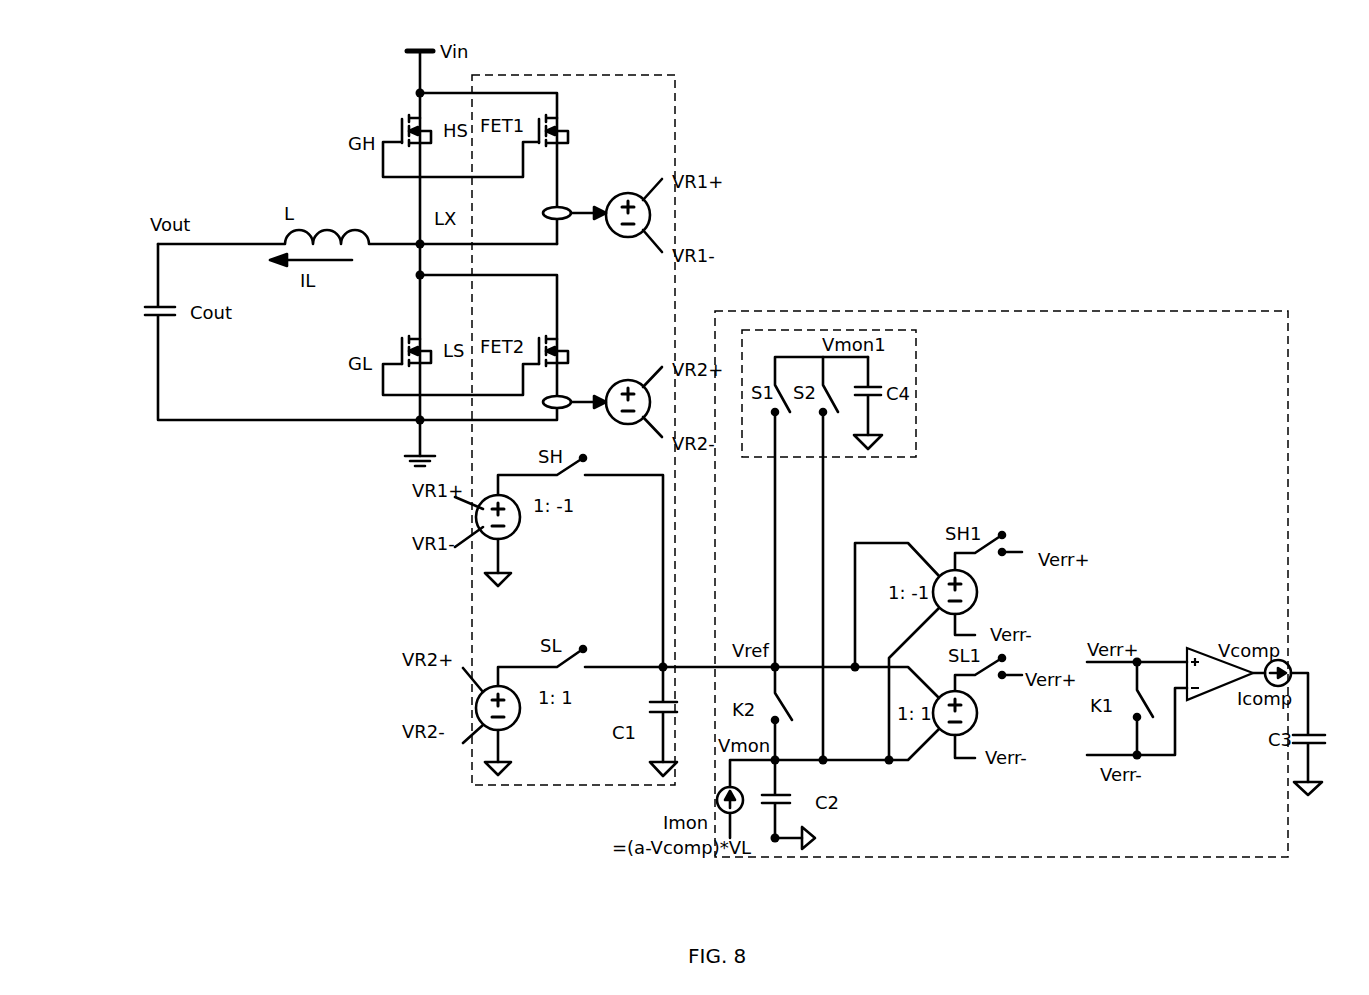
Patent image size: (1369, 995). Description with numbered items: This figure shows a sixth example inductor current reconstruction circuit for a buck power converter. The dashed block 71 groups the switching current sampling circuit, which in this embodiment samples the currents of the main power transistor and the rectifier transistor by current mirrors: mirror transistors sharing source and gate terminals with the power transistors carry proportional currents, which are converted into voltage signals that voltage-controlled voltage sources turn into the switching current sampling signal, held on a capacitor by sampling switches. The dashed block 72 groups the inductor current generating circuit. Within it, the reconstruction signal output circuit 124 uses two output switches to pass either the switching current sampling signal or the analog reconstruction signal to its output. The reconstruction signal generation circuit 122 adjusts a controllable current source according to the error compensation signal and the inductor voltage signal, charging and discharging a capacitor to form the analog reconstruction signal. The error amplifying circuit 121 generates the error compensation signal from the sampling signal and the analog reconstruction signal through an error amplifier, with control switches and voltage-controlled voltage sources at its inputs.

The power stage and current sensing block 71 is at (677, 105).
The control circuit block 72 is at (1087, 311).
The error amplifying circuit 121 is at (1220, 704).
The reconstruction signal generation circuit 122 is at (866, 821).
The reconstruction signal output circuit 124 is at (916, 412).